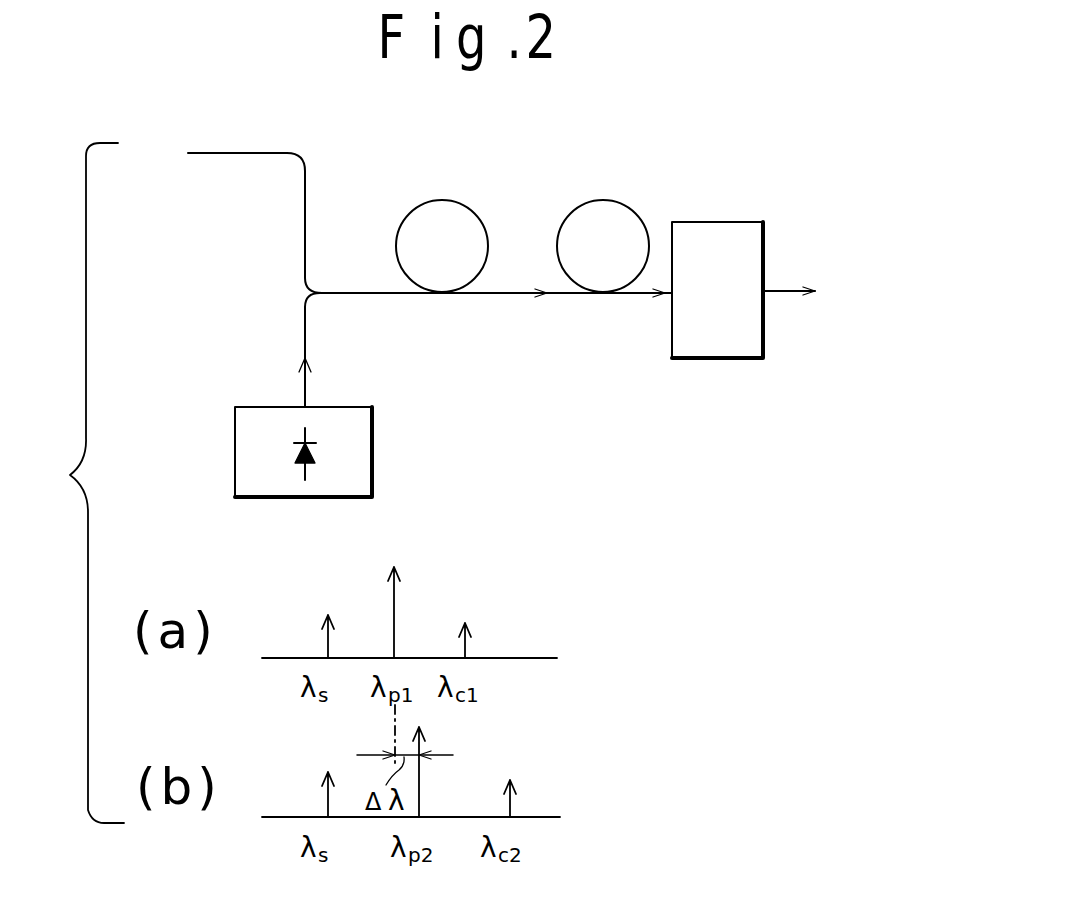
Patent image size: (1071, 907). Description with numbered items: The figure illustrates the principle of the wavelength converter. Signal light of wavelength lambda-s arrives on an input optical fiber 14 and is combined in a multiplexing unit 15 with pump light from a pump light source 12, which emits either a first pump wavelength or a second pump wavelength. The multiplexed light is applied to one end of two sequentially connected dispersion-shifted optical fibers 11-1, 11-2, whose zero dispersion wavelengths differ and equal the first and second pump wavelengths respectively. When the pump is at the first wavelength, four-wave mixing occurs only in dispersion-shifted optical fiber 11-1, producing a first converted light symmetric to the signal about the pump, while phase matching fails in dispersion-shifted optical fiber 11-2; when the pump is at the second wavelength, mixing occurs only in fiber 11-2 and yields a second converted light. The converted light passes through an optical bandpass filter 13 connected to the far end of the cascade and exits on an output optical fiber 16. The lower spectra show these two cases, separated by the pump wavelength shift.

The dispersion-shifted optical fiber 11-1 is at (400, 236).
The dispersion-shifted optical fiber 11-2 is at (561, 238).
The pump light source 12 is at (372, 472).
The optical bandpass filter 13 is at (733, 222).
The input optical fiber 14 is at (215, 155).
The multiplexing unit 15 is at (334, 292).
The output optical fiber 16 is at (778, 290).